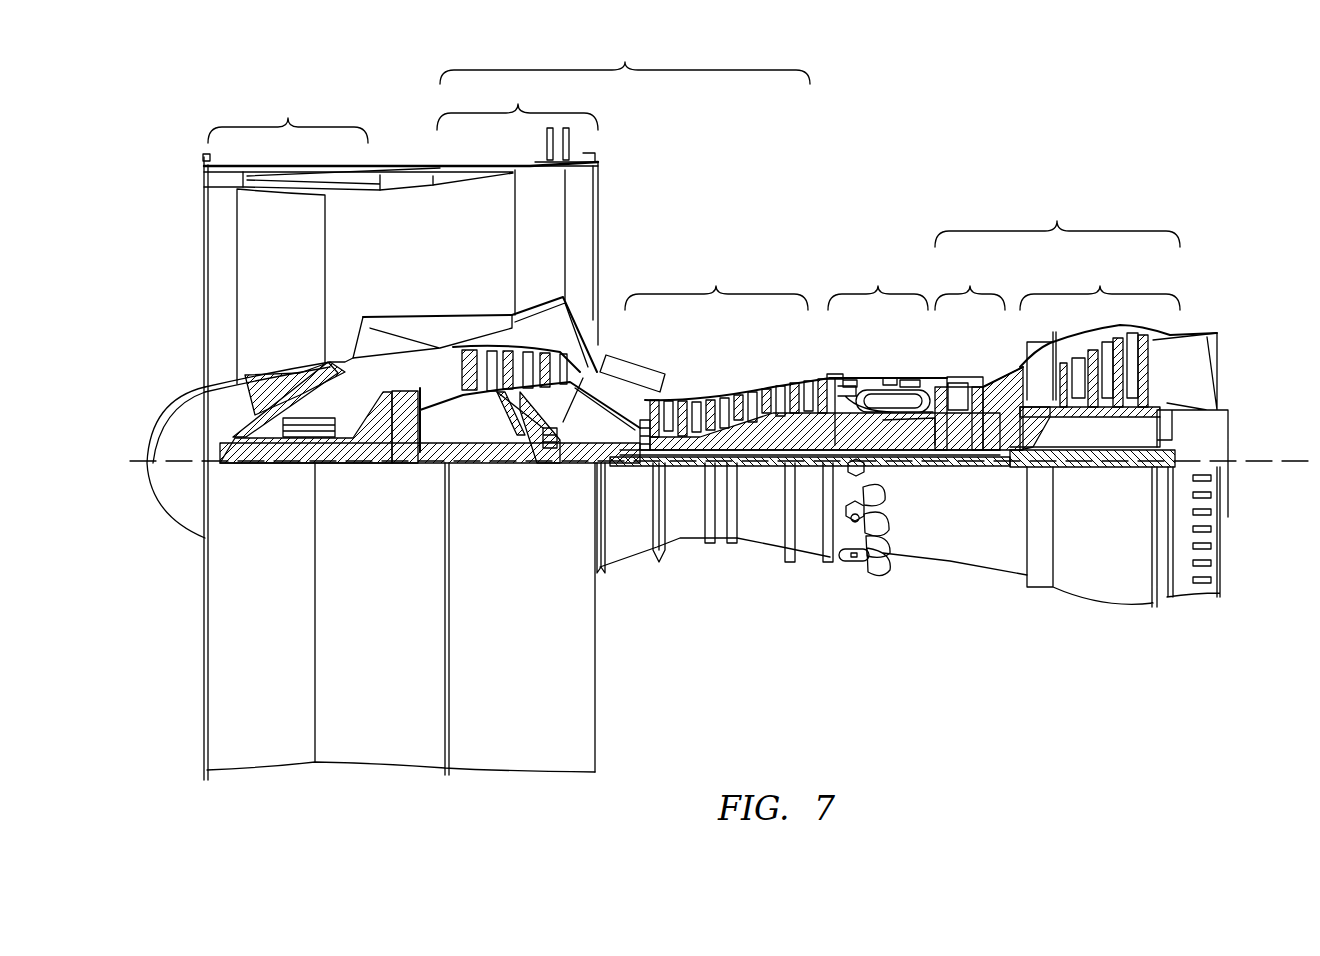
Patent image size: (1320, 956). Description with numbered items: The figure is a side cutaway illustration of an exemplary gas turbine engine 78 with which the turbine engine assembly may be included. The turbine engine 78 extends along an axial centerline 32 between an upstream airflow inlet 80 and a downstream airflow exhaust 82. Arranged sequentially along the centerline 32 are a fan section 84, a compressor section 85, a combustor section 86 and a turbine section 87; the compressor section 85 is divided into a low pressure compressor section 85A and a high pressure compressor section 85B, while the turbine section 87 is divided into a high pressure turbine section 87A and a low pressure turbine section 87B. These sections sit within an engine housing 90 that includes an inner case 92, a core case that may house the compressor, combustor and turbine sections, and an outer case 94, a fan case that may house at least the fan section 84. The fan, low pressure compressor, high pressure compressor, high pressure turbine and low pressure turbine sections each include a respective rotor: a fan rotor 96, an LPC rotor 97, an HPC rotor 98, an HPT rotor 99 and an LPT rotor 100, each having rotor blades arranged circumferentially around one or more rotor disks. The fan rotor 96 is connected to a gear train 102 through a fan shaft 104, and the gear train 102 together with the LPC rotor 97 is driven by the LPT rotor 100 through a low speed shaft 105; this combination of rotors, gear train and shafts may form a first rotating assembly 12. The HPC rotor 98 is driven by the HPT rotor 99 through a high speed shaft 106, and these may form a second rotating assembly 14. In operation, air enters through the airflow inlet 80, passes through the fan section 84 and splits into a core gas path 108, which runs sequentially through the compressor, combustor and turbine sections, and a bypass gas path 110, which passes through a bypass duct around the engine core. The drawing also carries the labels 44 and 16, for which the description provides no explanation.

The gas turbine engine 78 is at (174, 150).
The airflow inlet 80 is at (204, 238).
The airflow exhaust 82 is at (1220, 368).
The fan section 84 is at (288, 117).
The compressor section 85 is at (625, 58).
The low pressure compressor section 85A is at (517, 103).
The high pressure compressor section 85B is at (716, 285).
The combustor section 86 is at (878, 285).
The turbine section 87 is at (1057, 219).
The high pressure turbine section 87A is at (970, 285).
The low pressure turbine section 87B is at (1100, 285).
The fan case 44 is at (598, 218).
The bypass gas path 110 is at (456, 250).
The core gas path 108 is at (573, 373).
The core inlet strut 16 is at (643, 358).
The fan rotor 96 is at (240, 427).
The LPC rotor 97 is at (500, 420).
The HPC rotor 98 is at (757, 433).
The HPT rotor 99 is at (957, 440).
The LPT rotor 100 is at (1098, 410).
The gear train 102 is at (402, 470).
The fan shaft 104 is at (270, 468).
The low speed shaft 105 is at (1092, 470).
The high speed shaft 106 is at (897, 447).
The first rotating assembly 12 is at (588, 466).
The second rotating assembly 14 is at (678, 540).
The inner case 92 is at (683, 540).
The outer case 94 is at (565, 774).
The engine housing 90 is at (675, 602).
The axial centerline 32 is at (1268, 486).